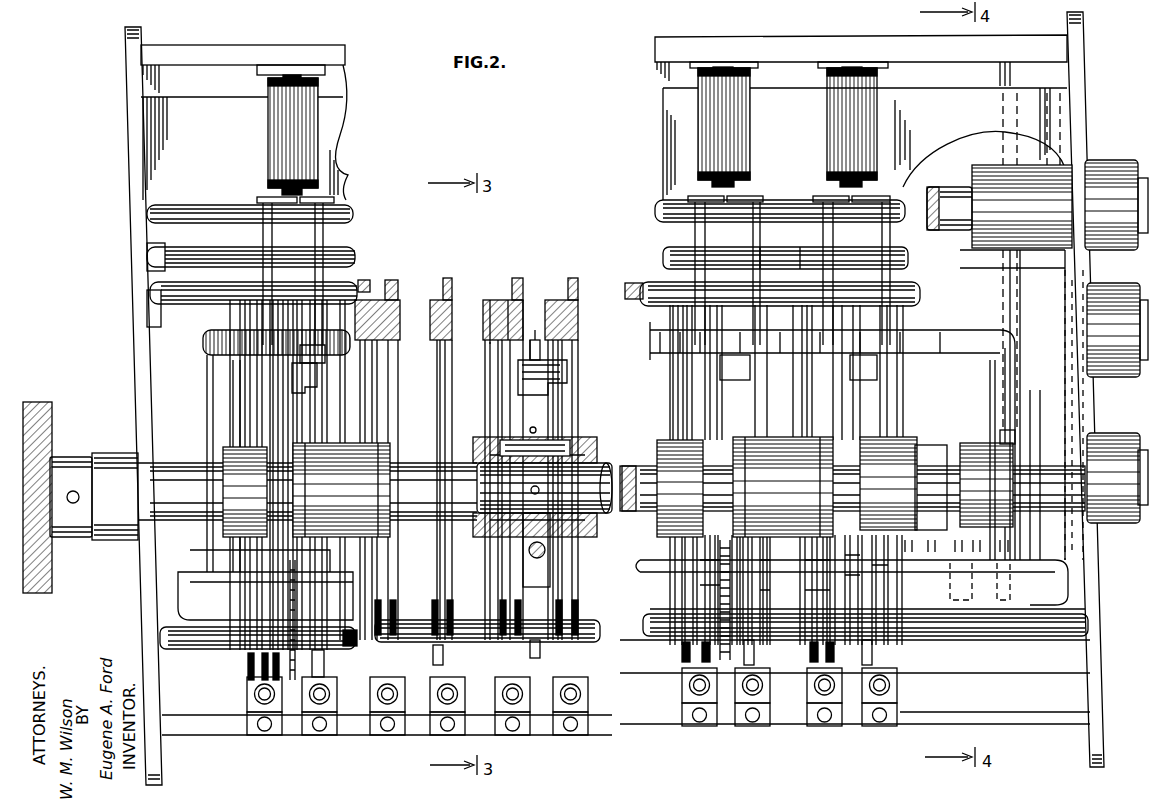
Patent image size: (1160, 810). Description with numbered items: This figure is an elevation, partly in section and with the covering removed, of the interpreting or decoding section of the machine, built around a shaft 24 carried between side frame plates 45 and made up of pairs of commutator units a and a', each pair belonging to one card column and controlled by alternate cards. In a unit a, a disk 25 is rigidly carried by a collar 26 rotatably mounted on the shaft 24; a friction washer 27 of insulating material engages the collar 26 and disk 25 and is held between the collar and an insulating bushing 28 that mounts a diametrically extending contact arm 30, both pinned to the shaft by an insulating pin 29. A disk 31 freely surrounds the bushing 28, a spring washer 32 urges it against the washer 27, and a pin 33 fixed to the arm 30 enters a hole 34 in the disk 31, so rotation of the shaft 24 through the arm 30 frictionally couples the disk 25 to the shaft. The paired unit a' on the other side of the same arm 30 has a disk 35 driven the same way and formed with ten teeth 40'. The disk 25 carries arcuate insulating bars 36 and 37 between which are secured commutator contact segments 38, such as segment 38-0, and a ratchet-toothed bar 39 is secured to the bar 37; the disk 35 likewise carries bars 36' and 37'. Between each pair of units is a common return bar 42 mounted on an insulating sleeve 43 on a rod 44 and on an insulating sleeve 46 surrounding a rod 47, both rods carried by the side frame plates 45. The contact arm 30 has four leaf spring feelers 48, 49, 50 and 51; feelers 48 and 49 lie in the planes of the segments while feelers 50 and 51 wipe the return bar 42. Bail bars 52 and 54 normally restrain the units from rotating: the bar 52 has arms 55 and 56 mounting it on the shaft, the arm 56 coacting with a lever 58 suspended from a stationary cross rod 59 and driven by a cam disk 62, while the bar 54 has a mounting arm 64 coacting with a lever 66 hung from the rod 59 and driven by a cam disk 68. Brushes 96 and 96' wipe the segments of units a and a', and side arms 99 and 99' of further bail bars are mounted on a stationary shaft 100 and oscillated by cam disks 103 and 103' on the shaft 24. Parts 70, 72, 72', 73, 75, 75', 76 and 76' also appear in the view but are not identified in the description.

The shaft 24 is at (645, 500).
The disk 25 is at (486, 310).
The collar 26 is at (510, 528).
The friction washer 27 is at (500, 450).
The bushing 28 is at (508, 540).
The pin 29 is at (540, 490).
The contact arm 30 is at (290, 432).
The disk 31 is at (496, 440).
The spring washer 32 is at (500, 438).
The pin 33 is at (542, 440).
The hole 34 is at (488, 456).
The disk 35 is at (566, 364).
The arcuate bar 36 is at (476, 295).
The ring-section bar 36' is at (565, 442).
The arcuate bar 37 is at (518, 291).
The ring-section bar 37' is at (590, 286).
The commutator contact segments 38 is at (515, 299).
The contact segment 38-0 is at (250, 672).
The bar 39 is at (524, 320).
The teeth 40' is at (321, 365).
The common return ring section or bar 42 is at (286, 412).
The insulating sleeve 43 is at (190, 648).
The rod 44 is at (349, 646).
The side frame plates 45 is at (134, 405).
The insulating sleeve 46 is at (360, 283).
The rod 47 is at (374, 283).
The leaf spring feeler 48 is at (492, 624).
The leaf spring feeler 49 is at (556, 368).
The leaf spring feeler 50 is at (534, 339).
The leaf spring feeler 51 is at (542, 655).
The bail bar 52 is at (215, 343).
The bail bar 54 is at (212, 592).
The arm 55 is at (212, 428).
The arm 56 is at (1012, 375).
The lever 58 is at (1006, 153).
The stationary cross rod 59 is at (942, 192).
The cam disk 62 is at (991, 582).
The mounting arm 64 is at (1066, 445).
The lever 66 is at (1055, 160).
The cam disk 68 is at (1003, 552).
The motor 70 is at (284, 143).
The rail 72 is at (535, 162).
The rail 72' is at (595, 180).
The frame 73 is at (333, 130).
The rod 75 is at (525, 273).
The rod 75' is at (587, 273).
The shaft 76 is at (250, 233).
The shaft 76' is at (252, 247).
The brushes 96 is at (560, 719).
The brushes 96' is at (336, 681).
The side arm 99 is at (939, 604).
The side arm 99' is at (984, 604).
The stationary shaft 100 is at (985, 272).
The cam disk 103 is at (908, 604).
The cam disk 103' is at (946, 621).
The commutator unit a is at (380, 445).
The commutator unit a' is at (441, 447).